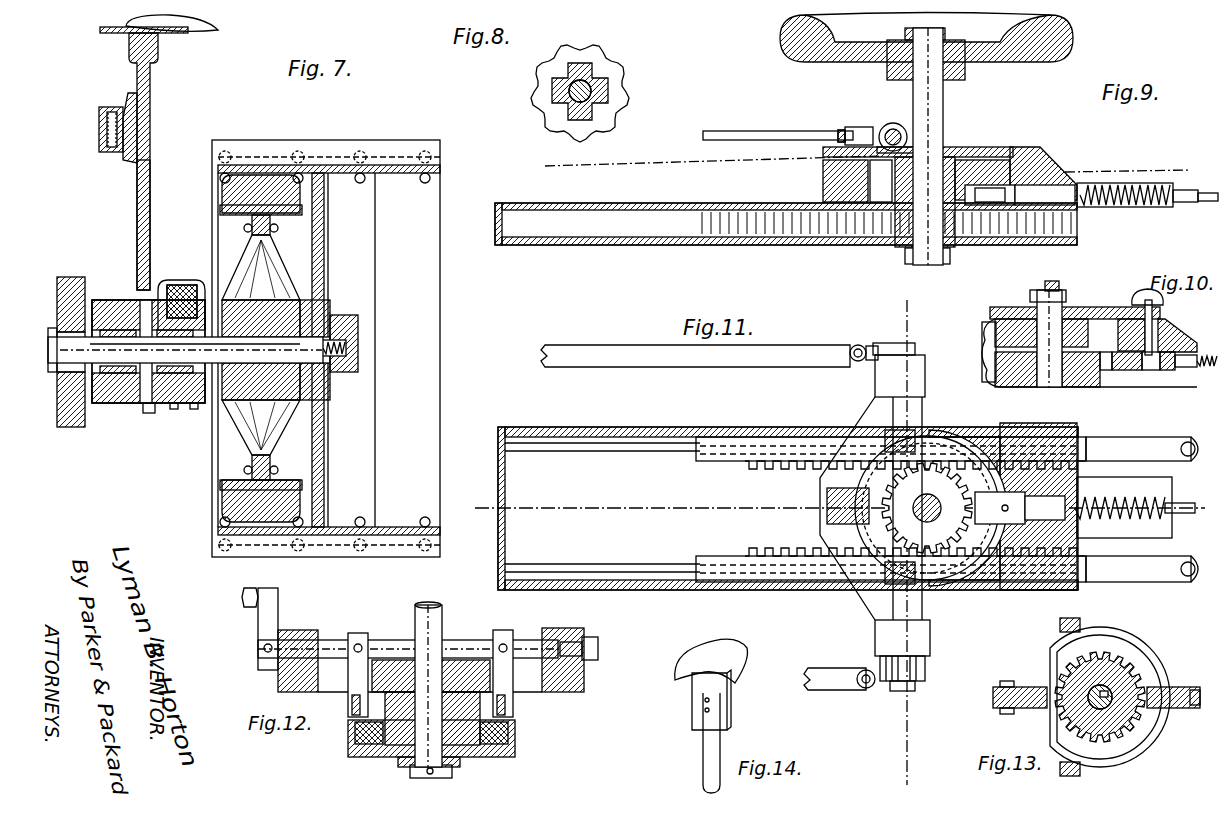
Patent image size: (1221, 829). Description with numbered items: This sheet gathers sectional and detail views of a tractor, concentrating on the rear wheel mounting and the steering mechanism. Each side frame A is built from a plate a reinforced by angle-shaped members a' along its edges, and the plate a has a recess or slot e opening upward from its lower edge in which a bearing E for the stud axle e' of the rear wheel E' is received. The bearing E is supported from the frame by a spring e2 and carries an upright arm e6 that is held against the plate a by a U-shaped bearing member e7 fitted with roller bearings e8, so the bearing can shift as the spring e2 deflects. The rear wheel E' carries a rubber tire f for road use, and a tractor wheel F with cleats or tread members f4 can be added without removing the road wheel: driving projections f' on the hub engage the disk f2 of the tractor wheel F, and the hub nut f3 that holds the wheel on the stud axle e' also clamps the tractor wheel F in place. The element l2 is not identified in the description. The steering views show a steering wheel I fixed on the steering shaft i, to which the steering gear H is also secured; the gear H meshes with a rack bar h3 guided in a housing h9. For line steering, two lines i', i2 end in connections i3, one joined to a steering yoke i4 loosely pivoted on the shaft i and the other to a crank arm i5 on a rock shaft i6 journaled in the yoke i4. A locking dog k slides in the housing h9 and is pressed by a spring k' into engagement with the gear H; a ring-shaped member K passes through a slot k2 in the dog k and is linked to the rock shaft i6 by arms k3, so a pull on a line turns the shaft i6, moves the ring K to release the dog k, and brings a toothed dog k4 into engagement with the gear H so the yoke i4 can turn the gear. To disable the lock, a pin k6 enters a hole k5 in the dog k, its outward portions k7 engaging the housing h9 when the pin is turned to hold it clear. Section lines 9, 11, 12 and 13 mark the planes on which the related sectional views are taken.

In FIG. 7, the reinforcing angle-shaped members a' is at (170, 28).
In FIG. 7, the plate a is at (156, 161).
In FIG. 7, the side frame A is at (152, 165).
In FIG. 7, the roller bearings e8 is at (112, 107).
In FIG. 7, the U-shaped holding or bearing member e7 is at (99, 135).
In FIG. 7, the upright arm e6 is at (126, 219).
In FIG. 7, the spring e2 is at (183, 285).
In FIG. 7, the pulley l2 is at (68, 278).
In FIG. 7, the recess or slot e is at (148, 286).
In FIG. 7, the stud axle e' is at (185, 388).
In FIG. 7, the bearing E is at (148, 378).
In FIG. 7, the rear wheel E' is at (236, 347).
In FIG. 7, the rubber tire f is at (240, 348).
In FIG. 7, the driving projections f' is at (349, 333).
In FIG. 8, the driving projections f' is at (571, 86).
In FIG. 7, the disk f2 is at (322, 421).
In FIG. 8, the disk f2 is at (617, 108).
In FIG. 7, the hub cap or nut f3 is at (356, 326).
In FIG. 7, the cleats or tread members f4 is at (327, 148).
In FIG. 7, the tractor wheel F is at (440, 325).
In FIG. 9, the steering wheel I is at (1060, 36).
In FIG. 9, the steering shaft i is at (935, 146).
In FIG. 10, the steering shaft i is at (1053, 326).
In FIG. 11, the steering shaft i is at (927, 508).
In FIG. 12, the steering shaft i is at (418, 684).
In FIG. 9, the connections i3 is at (860, 128).
In FIG. 11, the connections i3 is at (880, 343).
In FIG. 12, the connections i3 is at (270, 588).
In FIG. 9, the rock shaft i6 is at (895, 120).
In FIG. 11, the rock shaft i6 is at (920, 604).
In FIG. 12, the rock shaft i6 is at (326, 640).
In FIG. 9, the steering yoke i4 is at (956, 150).
In FIG. 10, the steering yoke i4 is at (1018, 318).
In FIG. 11, the steering yoke i4 is at (873, 400).
In FIG. 12, the steering yoke i4 is at (584, 677).
In FIG. 9, the arms k3 is at (848, 135).
In FIG. 11, the arms k3 is at (920, 437).
In FIG. 12, the arms k3 is at (360, 633).
In FIG. 13, the arms k3 is at (1062, 620).
In FIG. 9, the dog or toothed member k4 is at (832, 180).
In FIG. 10, the dog or toothed member k4 is at (986, 332).
In FIG. 11, the dog or toothed member k4 is at (827, 505).
In FIG. 12, the dog or toothed member k4 is at (352, 733).
In FIG. 13, the dog or toothed member k4 is at (993, 698).
In FIG. 9, the section line 13 is at (823, 185).
In FIG. 9, the spring k' is at (1147, 174).
In FIG. 11, the spring k' is at (1171, 491).
In FIG. 9, the section line 11 is at (868, 170).
In FIG. 9, the rack bar h3 is at (737, 210).
In FIG. 9, the housing h9 is at (643, 240).
In FIG. 11, the housing h9 is at (788, 508).
In FIG. 12, the housing h9 is at (350, 752).
In FIG. 9, the steering gear H is at (950, 240).
In FIG. 10, the steering gear H is at (1022, 385).
In FIG. 11, the steering gear H is at (962, 472).
In FIG. 12, the steering gear H is at (386, 748).
In FIG. 13, the steering gear H is at (1135, 722).
In FIG. 9, the ring-shaped member K is at (990, 232).
In FIG. 10, the ring-shaped member K is at (1150, 370).
In FIG. 11, the ring-shaped member K is at (990, 578).
In FIG. 12, the ring-shaped member K is at (492, 700).
In FIG. 13, the ring-shaped member K is at (1148, 652).
In FIG. 9, the locking dog or latch k is at (1045, 227).
In FIG. 10, the locking dog or latch k is at (1188, 378).
In FIG. 11, the locking dog or latch k is at (1037, 549).
In FIG. 13, the locking dog or latch k is at (1198, 684).
In FIG. 9, the hole k5 is at (1000, 190).
In FIG. 10, the hole k5 is at (1179, 329).
In FIG. 11, the hole k5 is at (1123, 507).
In FIG. 10, the pin k6 is at (1147, 290).
In FIG. 14, the pin k6 is at (703, 757).
In FIG. 10, the outwardly extending portions k7 is at (1144, 312).
In FIG. 14, the outwardly extending portions k7 is at (731, 718).
In FIG. 10, the hole or slot k2 is at (1128, 370).
In FIG. 13, the hole or slot k2 is at (1185, 687).
In FIG. 11, the steering line i' is at (695, 366).
In FIG. 11, the section line 12 is at (906, 748).
In FIG. 11, the section line 9 is at (838, 509).
In FIG. 11, the steering line i2 is at (831, 668).
In FIG. 11, the crank arm i5 is at (927, 668).
In FIG. 12, the crank arm i5 is at (252, 629).